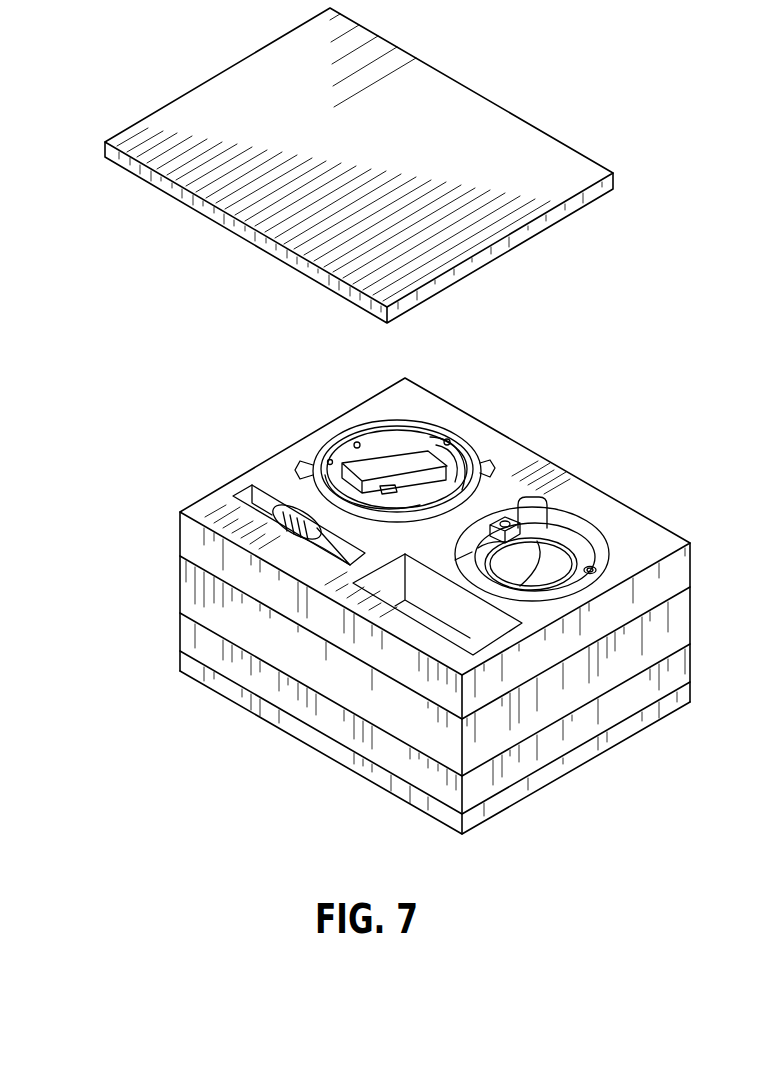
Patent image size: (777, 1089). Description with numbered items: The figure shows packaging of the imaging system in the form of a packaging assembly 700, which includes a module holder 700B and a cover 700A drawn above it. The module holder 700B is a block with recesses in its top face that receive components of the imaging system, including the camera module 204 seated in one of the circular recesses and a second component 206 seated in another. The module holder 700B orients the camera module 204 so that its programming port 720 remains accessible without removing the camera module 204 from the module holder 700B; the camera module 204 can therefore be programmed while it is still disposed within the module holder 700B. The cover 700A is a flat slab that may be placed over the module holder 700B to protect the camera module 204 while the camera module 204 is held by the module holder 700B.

The packaging assembly 700 is at (118, 61).
The cover 700A is at (551, 38).
The module holder 700B is at (613, 777).
The first circular holder 206 is at (352, 438).
The camera module 204 is at (587, 540).
The programming port 720 is at (513, 517).